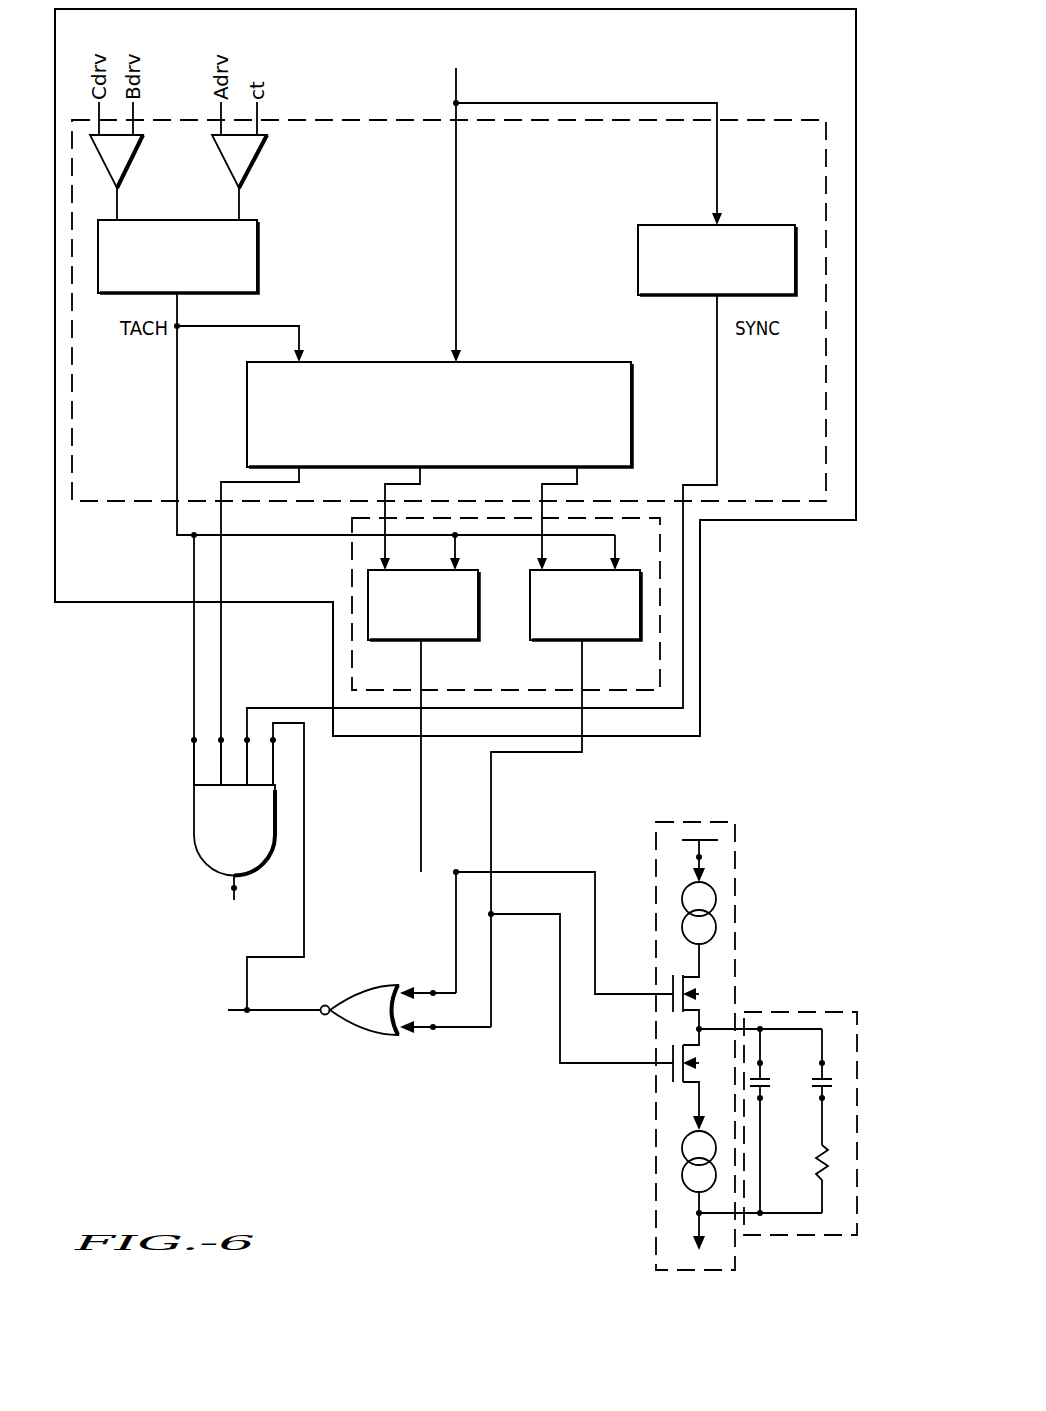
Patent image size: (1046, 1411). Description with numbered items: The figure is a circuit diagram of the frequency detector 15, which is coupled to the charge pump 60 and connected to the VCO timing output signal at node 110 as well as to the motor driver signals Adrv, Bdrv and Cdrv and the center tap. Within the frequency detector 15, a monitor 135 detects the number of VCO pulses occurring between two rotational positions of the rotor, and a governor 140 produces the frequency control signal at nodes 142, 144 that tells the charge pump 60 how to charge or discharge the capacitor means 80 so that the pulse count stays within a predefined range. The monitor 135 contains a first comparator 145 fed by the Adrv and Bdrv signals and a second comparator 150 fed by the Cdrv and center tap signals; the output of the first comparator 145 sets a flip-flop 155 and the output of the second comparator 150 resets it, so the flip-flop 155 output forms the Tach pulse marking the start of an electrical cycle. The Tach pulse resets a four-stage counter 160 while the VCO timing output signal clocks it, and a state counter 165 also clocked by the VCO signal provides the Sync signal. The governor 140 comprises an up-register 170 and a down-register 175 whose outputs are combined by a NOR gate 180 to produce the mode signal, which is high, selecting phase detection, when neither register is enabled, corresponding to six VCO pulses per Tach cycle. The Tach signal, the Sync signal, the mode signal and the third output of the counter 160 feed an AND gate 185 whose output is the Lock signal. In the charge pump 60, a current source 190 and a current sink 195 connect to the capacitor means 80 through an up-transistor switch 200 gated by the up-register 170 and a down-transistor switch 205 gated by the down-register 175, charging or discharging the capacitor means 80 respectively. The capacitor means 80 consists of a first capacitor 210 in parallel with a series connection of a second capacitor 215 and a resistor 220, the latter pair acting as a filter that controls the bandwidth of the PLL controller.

The frequency detector 15 is at (857, 461).
The charge pump 60 is at (735, 845).
The capacitor means 80 is at (857, 1015).
The node 110 is at (456, 103).
The monitor 135 is at (802, 120).
The governor 140 is at (352, 518).
The node 142 is at (456, 905).
The node 144 is at (491, 922).
The first comparator 145 is at (128, 168).
The second comparator 150 is at (250, 168).
The flip-flop 155 is at (257, 268).
The 4-stage counter 160 is at (526, 362).
The state counter 165 is at (638, 268).
The up-register 170 is at (478, 590).
The down-register 175 is at (530, 625).
The NOR gate 180 is at (392, 1037).
The AND gate 185 is at (194, 815).
The current source 190 is at (716, 900).
The current sink 195 is at (682, 1175).
The up-transistor switch 200 is at (712, 970).
The down-transistor switch 205 is at (660, 1082).
The first capacitor 210 is at (770, 1066).
The second capacitor 215 is at (835, 1075).
The resistor 220 is at (840, 1150).